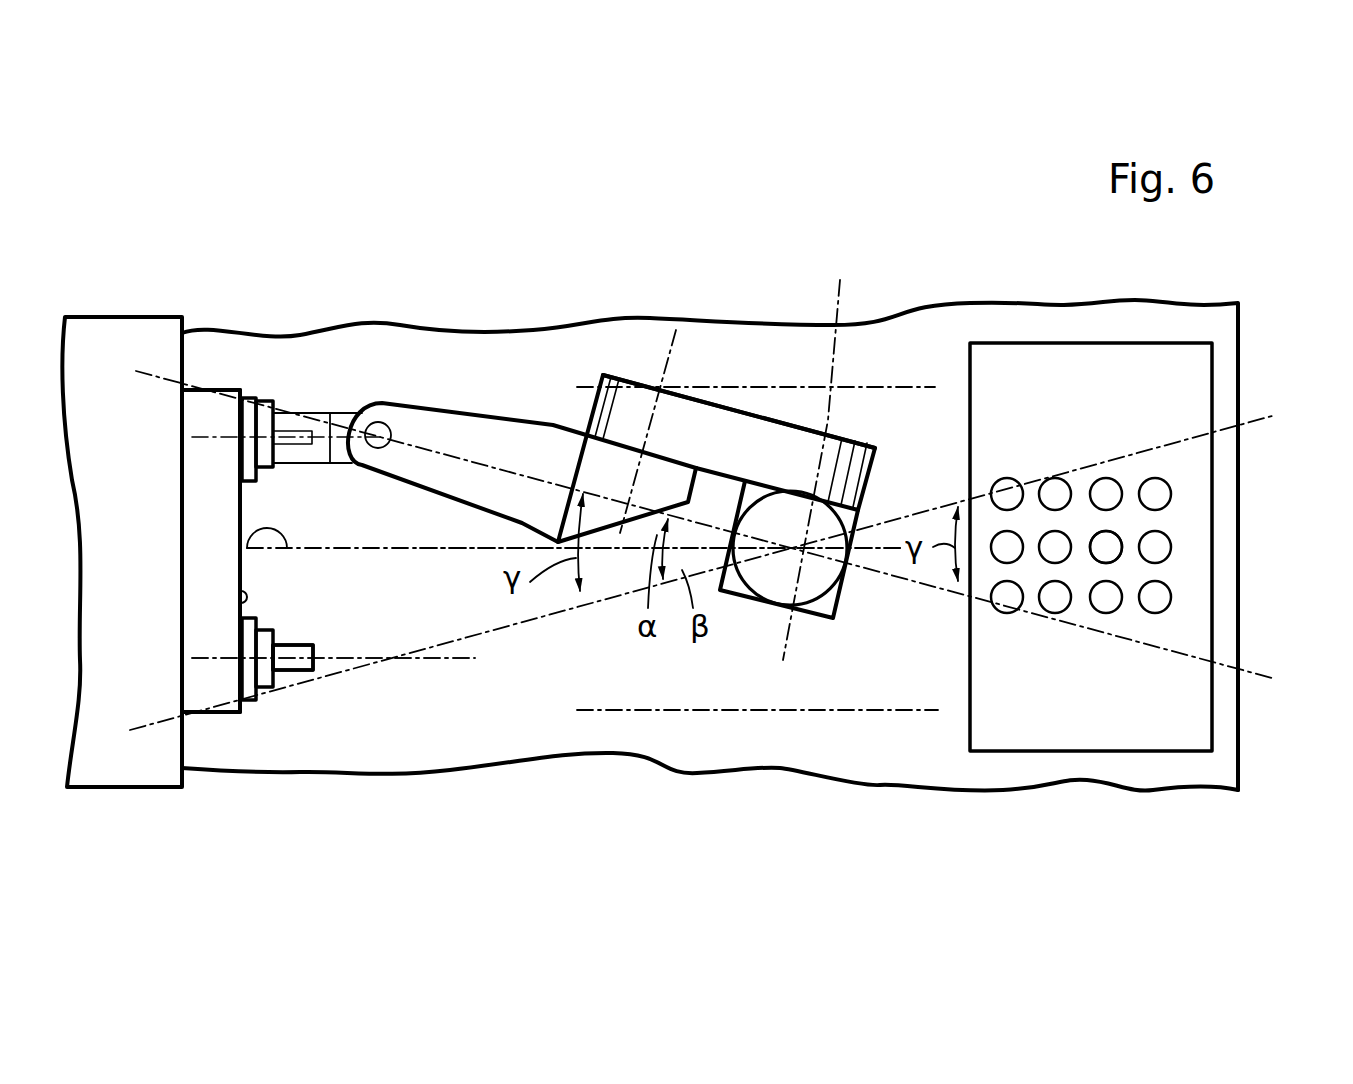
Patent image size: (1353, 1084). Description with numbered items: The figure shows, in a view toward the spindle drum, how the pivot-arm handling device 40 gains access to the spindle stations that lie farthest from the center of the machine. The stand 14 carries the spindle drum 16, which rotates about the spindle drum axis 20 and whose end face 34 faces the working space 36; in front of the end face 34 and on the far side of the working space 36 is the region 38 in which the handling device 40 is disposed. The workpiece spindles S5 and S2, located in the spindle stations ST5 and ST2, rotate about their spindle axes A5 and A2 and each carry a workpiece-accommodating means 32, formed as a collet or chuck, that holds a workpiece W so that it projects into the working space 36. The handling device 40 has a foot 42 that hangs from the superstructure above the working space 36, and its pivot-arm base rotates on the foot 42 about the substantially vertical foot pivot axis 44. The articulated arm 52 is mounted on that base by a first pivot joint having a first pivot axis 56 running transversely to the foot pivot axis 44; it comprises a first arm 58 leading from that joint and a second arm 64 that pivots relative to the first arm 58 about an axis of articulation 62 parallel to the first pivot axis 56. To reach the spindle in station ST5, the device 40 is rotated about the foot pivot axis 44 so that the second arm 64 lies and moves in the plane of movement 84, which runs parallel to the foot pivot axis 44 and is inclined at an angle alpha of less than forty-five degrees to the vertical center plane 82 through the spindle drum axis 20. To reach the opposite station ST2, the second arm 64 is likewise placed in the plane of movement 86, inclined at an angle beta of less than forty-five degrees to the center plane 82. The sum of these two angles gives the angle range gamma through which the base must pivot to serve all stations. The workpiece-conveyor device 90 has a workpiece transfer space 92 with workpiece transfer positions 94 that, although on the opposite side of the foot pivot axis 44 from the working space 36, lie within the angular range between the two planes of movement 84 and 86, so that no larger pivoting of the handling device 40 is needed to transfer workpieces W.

The stand 14 is at (100, 346).
The spindle drum 16 is at (206, 505).
The spindle drum axis 20 is at (420, 546).
The workpiece-accommodating means 32 is at (262, 452).
The end face 34 is at (243, 594).
The working space 36 is at (374, 612).
The region 38 is at (890, 640).
The pivot-arm handling device 40 is at (565, 396).
The foot 42 is at (822, 580).
The foot pivot axis 44 is at (790, 620).
The articulated arm 52 is at (713, 394).
The first pivot axis 56 is at (841, 348).
The first arm 58 is at (757, 428).
The axis of articulation 62 is at (676, 326).
The second arm 64 is at (482, 415).
The vertical center plane 82 is at (245, 536).
The plane of movement 84 is at (503, 467).
The plane of movement 86 is at (493, 632).
The workpiece-conveyor device 90 is at (1202, 487).
The workpiece transfer space 92 is at (1128, 522).
The workpiece transfer positions 94 is at (1112, 556).
The spindle axis A2 is at (467, 660).
The spindle axis A5 is at (447, 412).
The workpiece spindle S2 is at (245, 672).
The workpiece spindle S5 is at (245, 426).
The spindle station ST2 is at (240, 727).
The spindle station ST5 is at (240, 376).
The workpiece W is at (300, 670).